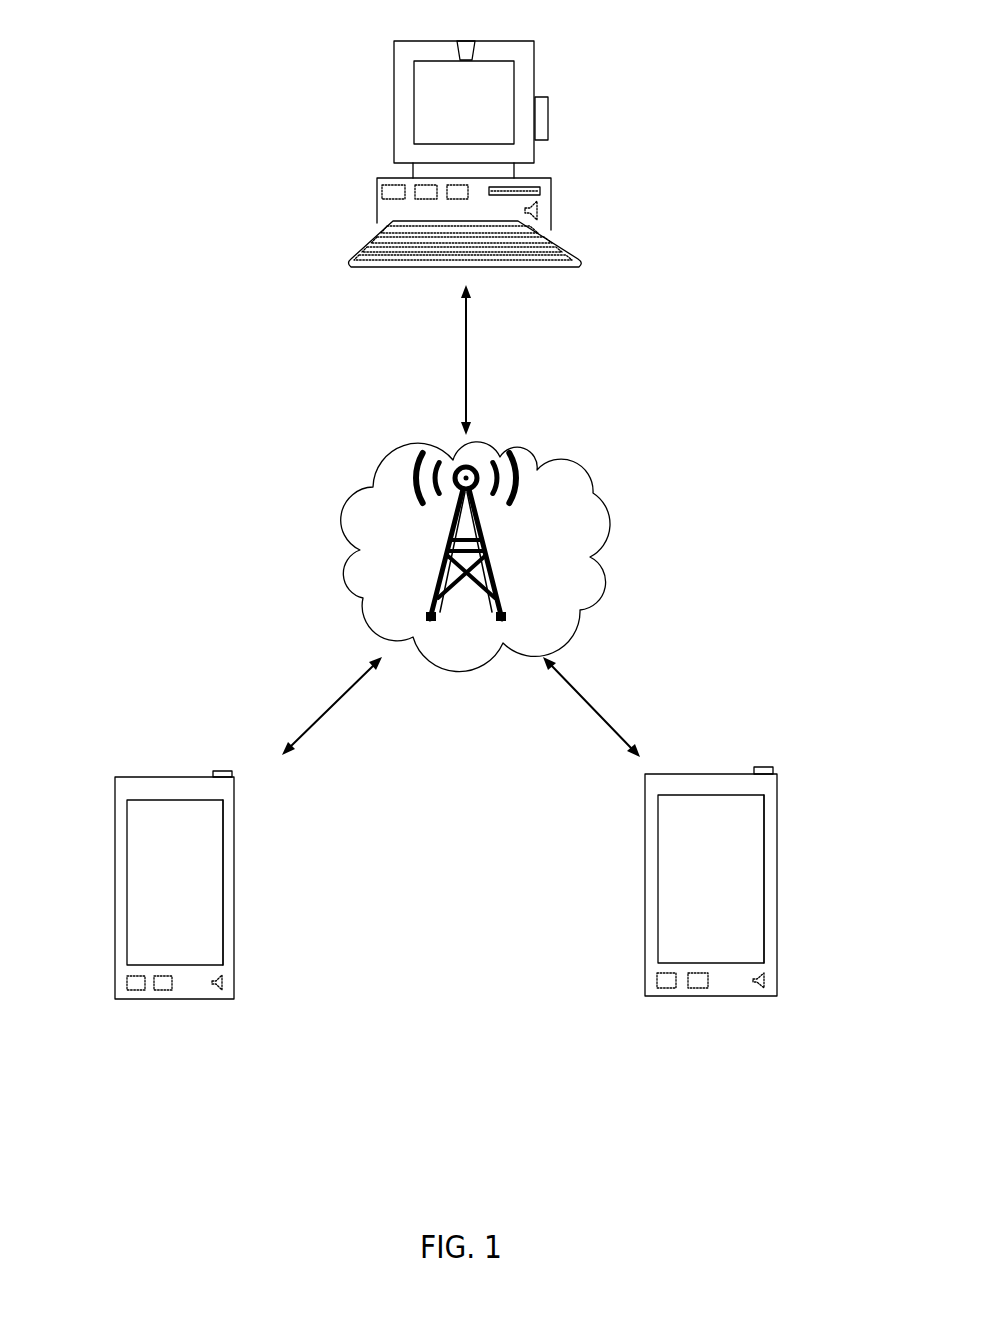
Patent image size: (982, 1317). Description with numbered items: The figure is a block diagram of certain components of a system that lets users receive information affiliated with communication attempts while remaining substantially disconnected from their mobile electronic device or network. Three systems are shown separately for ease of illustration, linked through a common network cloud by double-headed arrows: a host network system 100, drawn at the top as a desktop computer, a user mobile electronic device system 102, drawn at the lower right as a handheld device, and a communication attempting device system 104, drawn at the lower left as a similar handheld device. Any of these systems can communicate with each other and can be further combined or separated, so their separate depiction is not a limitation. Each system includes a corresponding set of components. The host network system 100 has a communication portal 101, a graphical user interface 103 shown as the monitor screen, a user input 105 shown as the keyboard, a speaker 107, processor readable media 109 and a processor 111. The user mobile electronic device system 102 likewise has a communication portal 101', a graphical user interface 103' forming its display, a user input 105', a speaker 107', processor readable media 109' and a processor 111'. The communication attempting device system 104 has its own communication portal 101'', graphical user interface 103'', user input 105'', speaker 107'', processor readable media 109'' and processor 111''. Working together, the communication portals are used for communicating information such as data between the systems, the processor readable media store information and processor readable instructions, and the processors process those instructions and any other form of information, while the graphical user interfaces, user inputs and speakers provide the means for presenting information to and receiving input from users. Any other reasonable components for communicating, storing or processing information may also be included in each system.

The host network system 100 is at (461, 134).
The communication portal 101 is at (572, 118).
The graphical user interface 103 is at (417, 98).
The user input 105 is at (496, 244).
The speaker 107 is at (572, 202).
The processor readable media 109 is at (380, 195).
The processor 111 is at (358, 223).
The user mobile electronic device system 102 is at (716, 877).
The communication attempting device system 104 is at (185, 889).
The communication portal 101' is at (798, 751).
The graphical user interface 103' is at (674, 873).
The user input 105' is at (799, 879).
The speaker 107' is at (807, 987).
The processor readable media 109' is at (631, 999).
The processor 111' is at (622, 970).
The communication portal 101'' is at (247, 754).
The graphical user interface 103'' is at (133, 874).
The user input 105'' is at (259, 882).
The speaker 107'' is at (266, 991).
The processor readable media 109'' is at (113, 1011).
The processor 111'' is at (96, 973).